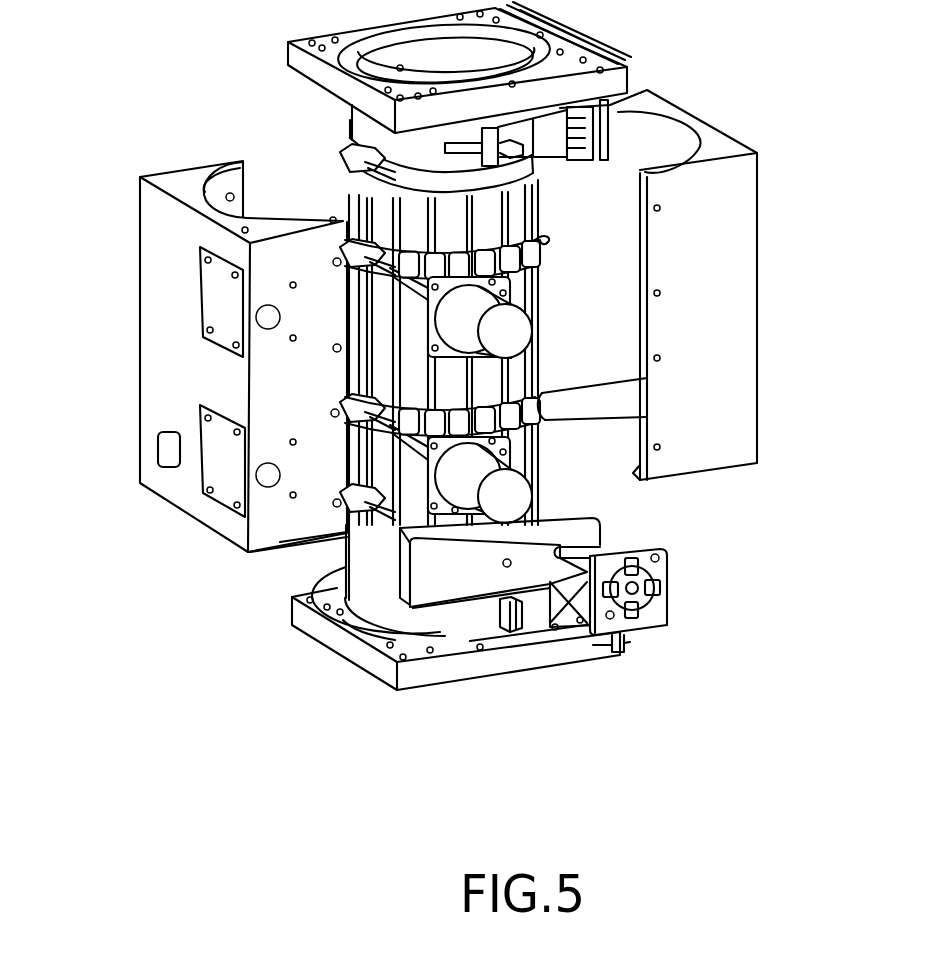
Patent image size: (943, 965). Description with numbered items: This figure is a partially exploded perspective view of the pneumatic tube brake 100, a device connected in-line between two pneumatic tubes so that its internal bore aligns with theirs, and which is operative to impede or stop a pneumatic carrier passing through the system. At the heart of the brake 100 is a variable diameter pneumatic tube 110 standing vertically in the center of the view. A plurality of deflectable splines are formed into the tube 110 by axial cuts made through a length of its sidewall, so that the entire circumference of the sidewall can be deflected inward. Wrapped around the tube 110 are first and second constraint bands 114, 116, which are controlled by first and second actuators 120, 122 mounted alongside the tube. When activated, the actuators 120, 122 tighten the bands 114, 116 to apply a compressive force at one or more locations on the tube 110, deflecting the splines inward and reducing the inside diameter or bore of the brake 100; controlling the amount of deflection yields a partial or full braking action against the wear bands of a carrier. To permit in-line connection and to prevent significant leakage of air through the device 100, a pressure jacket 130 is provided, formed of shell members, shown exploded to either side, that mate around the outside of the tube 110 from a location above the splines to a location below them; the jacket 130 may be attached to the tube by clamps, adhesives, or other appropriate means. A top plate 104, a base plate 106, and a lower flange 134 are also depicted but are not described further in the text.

The pneumatic tube brake 100 is at (232, 614).
The top plate 104 is at (296, 63).
The base plate 106 is at (497, 662).
The variable diameter pneumatic tube 110 is at (294, 552).
The first constraint band 114 is at (545, 236).
The second constraint band 116 is at (540, 387).
The first actuator 120 is at (480, 317).
The second actuator 122 is at (480, 480).
The pressure jacket 130 is at (158, 377).
The mounting flange 134 is at (372, 622).